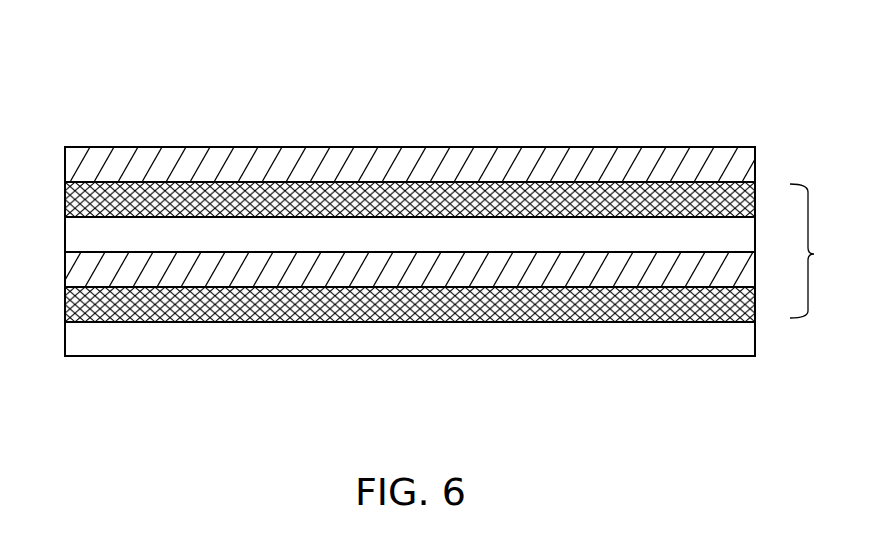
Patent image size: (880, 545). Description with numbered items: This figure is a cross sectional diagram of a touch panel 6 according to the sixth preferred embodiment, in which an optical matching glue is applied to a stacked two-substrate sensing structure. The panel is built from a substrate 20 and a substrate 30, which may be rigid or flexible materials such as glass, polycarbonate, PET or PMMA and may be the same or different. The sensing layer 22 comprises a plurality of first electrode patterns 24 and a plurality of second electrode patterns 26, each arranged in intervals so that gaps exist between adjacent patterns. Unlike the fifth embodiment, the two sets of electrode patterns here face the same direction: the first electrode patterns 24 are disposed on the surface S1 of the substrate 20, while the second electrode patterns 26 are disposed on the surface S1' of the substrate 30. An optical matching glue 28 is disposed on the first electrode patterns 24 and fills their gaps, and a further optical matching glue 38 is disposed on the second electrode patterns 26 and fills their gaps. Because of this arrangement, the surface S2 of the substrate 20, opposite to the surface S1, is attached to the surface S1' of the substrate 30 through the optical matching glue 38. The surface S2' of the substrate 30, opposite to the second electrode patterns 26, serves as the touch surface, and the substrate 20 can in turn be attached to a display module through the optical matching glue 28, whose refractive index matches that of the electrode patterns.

The touch panel 6 is at (659, 50).
The substrate 20 is at (82, 233).
The sensing layer 22 is at (819, 251).
The first electrode patterns 24 is at (745, 201).
The second electrode patterns 26 is at (745, 304).
The optical matching glue 28 is at (742, 166).
The substrate 30 is at (743, 338).
The optical matching glue 38 is at (85, 272).
The surface S1 is at (391, 204).
The surface S2 is at (391, 262).
The surface S1' is at (391, 310).
The surface S2' is at (391, 367).